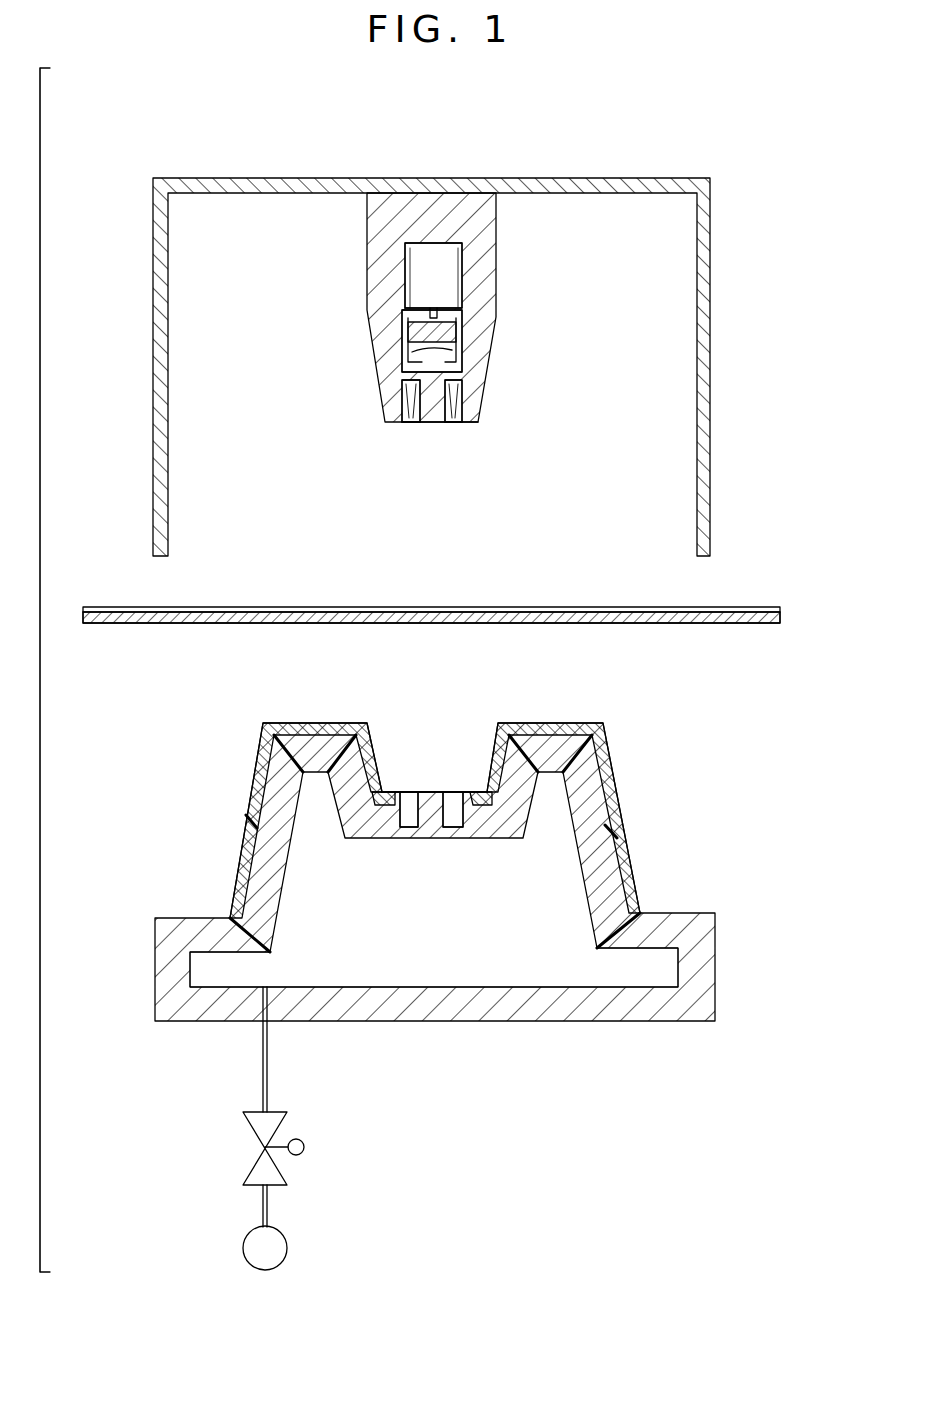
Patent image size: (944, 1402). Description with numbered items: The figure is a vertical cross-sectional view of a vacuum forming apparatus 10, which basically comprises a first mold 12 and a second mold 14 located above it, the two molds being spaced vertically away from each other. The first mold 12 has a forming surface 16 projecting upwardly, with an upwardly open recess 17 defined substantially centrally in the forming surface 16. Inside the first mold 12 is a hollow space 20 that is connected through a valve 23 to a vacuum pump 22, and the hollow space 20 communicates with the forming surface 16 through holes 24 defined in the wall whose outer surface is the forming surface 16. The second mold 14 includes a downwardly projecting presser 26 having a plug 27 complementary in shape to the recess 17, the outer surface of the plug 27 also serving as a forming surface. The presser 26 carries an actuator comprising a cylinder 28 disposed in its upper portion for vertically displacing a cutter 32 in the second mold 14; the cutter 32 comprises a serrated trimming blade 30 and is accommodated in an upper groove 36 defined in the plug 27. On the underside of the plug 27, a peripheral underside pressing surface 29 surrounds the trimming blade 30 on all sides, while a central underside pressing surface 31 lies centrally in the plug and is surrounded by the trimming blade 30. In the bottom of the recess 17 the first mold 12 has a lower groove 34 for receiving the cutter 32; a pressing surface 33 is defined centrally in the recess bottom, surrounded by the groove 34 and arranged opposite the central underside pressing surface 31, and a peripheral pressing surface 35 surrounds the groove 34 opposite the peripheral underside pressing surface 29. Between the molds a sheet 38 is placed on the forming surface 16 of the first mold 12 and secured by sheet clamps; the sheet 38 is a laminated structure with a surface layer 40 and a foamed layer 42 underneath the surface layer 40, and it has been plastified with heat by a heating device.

The vacuum forming apparatus 10 is at (762, 374).
The first mold 12 is at (730, 968).
The second mold 14 is at (726, 240).
The forming surface 16 is at (616, 784).
The recess 17 is at (449, 750).
The hollow space 20 is at (425, 951).
The vacuum pump 22 is at (288, 1245).
The valve 23 is at (304, 1147).
The holes 24 is at (342, 722).
The presser 26 is at (360, 292).
The plug 27 is at (384, 424).
The cylinder 28 is at (435, 262).
The peripheral underside pressing surface 29 is at (468, 424).
The trimming blade 30 is at (457, 356).
The central underside pressing surface 31 is at (432, 424).
The cutter 32 is at (465, 322).
The pressing surface 33 is at (440, 790).
The lower groove 34 is at (455, 832).
The peripheral pressing surface 35 is at (395, 790).
The upper groove 36 is at (410, 424).
The sheet 38 is at (786, 614).
The surface layer 40 is at (738, 608).
The foamed layer 42 is at (738, 624).